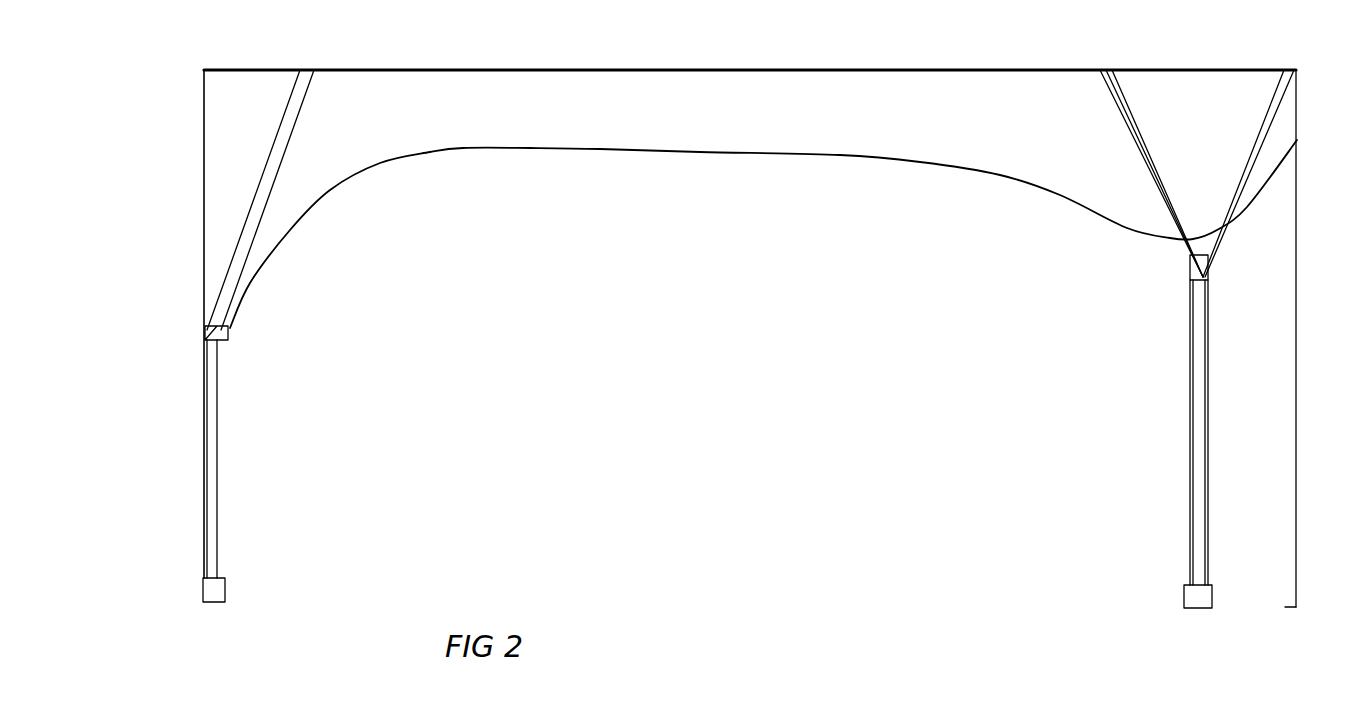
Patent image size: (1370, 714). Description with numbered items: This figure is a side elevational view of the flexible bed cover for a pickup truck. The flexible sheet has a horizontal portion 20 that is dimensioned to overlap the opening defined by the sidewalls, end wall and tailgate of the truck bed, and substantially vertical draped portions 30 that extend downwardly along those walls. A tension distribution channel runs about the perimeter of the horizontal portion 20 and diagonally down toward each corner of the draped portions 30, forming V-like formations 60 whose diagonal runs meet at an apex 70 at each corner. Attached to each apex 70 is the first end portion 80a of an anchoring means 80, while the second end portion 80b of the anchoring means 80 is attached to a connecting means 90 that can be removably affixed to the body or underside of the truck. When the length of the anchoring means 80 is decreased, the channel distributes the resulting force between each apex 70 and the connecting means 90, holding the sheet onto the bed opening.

The horizontal portion 20 is at (763, 70).
The substantially vertical draped portions 30 is at (918, 143).
The V-like formations 60 is at (288, 175).
The apex 70 is at (222, 336).
The anchoring means 80 is at (218, 450).
The first end portion 80a is at (218, 396).
The second end portion 80b is at (218, 527).
The connecting means 90 is at (225, 594).